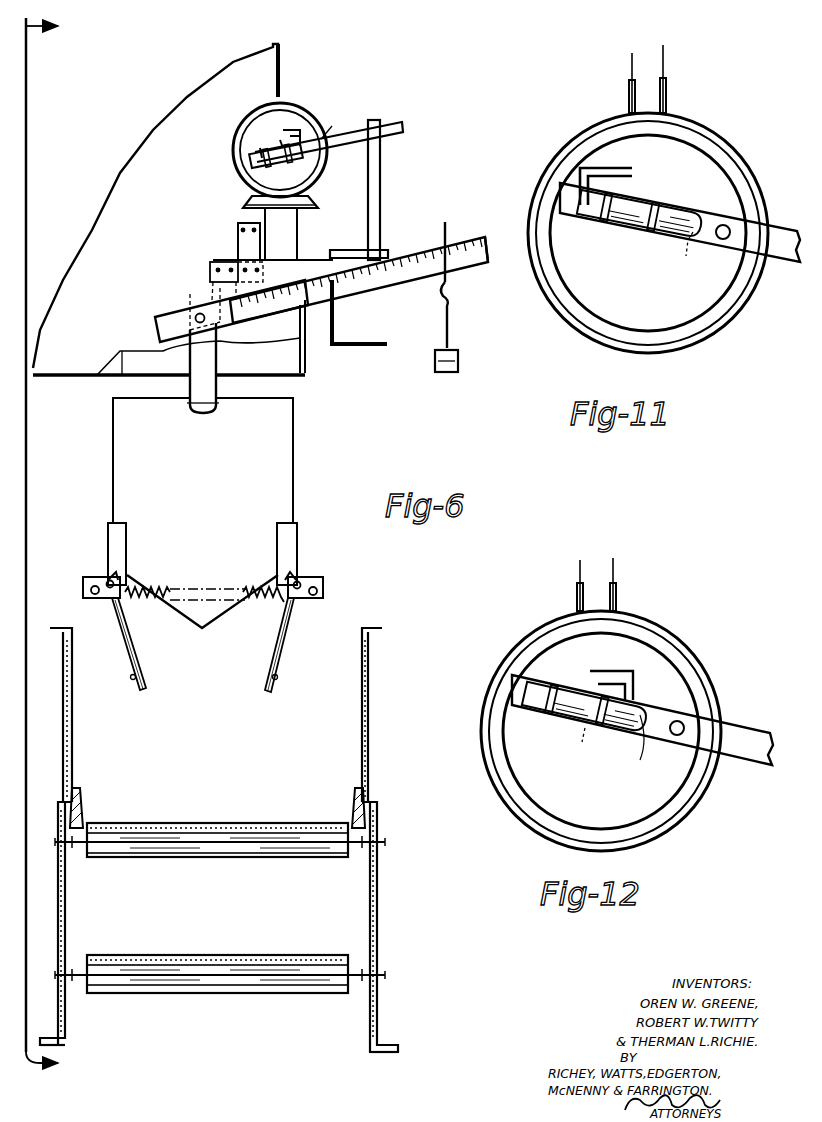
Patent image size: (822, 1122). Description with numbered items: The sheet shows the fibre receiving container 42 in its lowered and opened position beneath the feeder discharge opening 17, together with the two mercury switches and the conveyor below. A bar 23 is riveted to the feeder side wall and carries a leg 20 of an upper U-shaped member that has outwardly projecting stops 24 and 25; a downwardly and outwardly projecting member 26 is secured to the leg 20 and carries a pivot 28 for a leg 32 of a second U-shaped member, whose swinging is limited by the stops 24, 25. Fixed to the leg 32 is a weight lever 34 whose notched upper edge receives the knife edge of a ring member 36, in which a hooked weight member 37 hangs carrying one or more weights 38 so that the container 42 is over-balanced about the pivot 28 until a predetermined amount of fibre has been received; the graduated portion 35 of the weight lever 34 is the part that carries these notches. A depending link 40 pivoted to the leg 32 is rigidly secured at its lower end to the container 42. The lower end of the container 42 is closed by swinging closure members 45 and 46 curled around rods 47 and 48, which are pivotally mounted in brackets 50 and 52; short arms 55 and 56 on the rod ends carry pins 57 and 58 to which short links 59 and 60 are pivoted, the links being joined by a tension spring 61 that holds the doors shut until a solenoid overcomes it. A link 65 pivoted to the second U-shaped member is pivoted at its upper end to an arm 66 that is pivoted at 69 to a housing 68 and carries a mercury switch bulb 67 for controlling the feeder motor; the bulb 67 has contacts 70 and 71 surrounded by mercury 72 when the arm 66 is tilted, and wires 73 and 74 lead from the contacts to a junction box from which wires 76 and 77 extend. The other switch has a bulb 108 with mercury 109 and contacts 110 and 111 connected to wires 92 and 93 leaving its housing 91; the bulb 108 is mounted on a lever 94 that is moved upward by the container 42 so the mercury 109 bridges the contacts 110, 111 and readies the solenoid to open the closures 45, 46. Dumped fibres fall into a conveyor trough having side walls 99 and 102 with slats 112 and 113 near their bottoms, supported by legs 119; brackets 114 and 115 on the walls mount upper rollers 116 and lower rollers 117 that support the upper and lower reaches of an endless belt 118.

In FIG. 6, the discharge opening 17 is at (290, 372).
In FIG. 6, the leg 20 is at (310, 238).
In FIG. 6, the bar 23 is at (237, 240).
In FIG. 6, the stop 24 is at (360, 240).
In FIG. 6, the stop 25 is at (347, 345).
In FIG. 6, the downwardly and outwardly projecting member 26 is at (205, 262).
In FIG. 6, the pivot 28 is at (215, 310).
In FIG. 6, the leg 32 is at (163, 325).
In FIG. 6, the weight lever 34 is at (482, 265).
In FIG. 6, the graduated scale beam 35 is at (427, 252).
In FIG. 6, the ring member 36 is at (452, 212).
In FIG. 6, the hooked weight member 37 is at (448, 330).
In FIG. 6, the weight 38 is at (458, 360).
In FIG. 6, the depending link 40 is at (192, 365).
In FIG. 6, the fibre receiving container 42 is at (203, 513).
In FIG. 6, the closure member 45 is at (262, 648).
In FIG. 6, the closure member 46 is at (134, 648).
In FIG. 6, the rod 47 is at (300, 573).
In FIG. 6, the rod 48 is at (105, 570).
In FIG. 6, the bracket 50 is at (296, 532).
In FIG. 6, the bracket 52 is at (108, 540).
In FIG. 6, the short arm 55 is at (324, 587).
In FIG. 6, the short arm 56 is at (82, 585).
In FIG. 6, the pin 57 is at (313, 598).
In FIG. 6, the pin 58 is at (93, 595).
In FIG. 6, the short link 59 is at (112, 600).
In FIG. 6, the short link 60 is at (296, 598).
In FIG. 6, the tension spring 61 is at (168, 580).
In FIG. 6, the link 65 is at (380, 205).
In FIG. 6, the arm 66 is at (400, 118).
In FIG. 12, the arm 66 is at (765, 730).
In FIG. 6, the mercury switch bulb 67 is at (262, 139).
In FIG. 12, the mercury switch bulb 67 is at (550, 690).
In FIG. 6, the housing 68 is at (295, 100).
In FIG. 12, the housing 68 is at (690, 648).
In FIG. 6, the pivot 69 is at (336, 124).
In FIG. 11, the pivot 69 is at (726, 225).
In FIG. 12, the pivot 69 is at (680, 736).
In FIG. 12, the contact 70 is at (628, 728).
In FIG. 12, the contact 71 is at (641, 744).
In FIG. 6, the mercury 72 is at (285, 166).
In FIG. 12, the mercury 72 is at (572, 740).
In FIG. 6, the wire 73 is at (280, 128).
In FIG. 12, the wire 73 is at (595, 698).
In FIG. 6, the wire 74 is at (294, 127).
In FIG. 12, the wire 74 is at (635, 675).
In FIG. 12, the wire 76 is at (576, 598).
In FIG. 12, the wire 77 is at (617, 598).
In FIG. 11, the housing 91 is at (740, 150).
In FIG. 11, the wire 92 is at (628, 97).
In FIG. 11, the wire 93 is at (667, 97).
In FIG. 11, the lever 94 is at (794, 228).
In FIG. 6, the side wall 99 is at (361, 752).
In FIG. 6, the side wall 102 is at (73, 740).
In FIG. 11, the mercury switch bulb 108 is at (658, 200).
In FIG. 11, the mercury 109 is at (671, 253).
In FIG. 11, the contact 110 is at (578, 208).
In FIG. 11, the contact 111 is at (590, 210).
In FIG. 6, the slat 112 is at (349, 800).
In FIG. 6, the slat 113 is at (84, 810).
In FIG. 6, the bracket 114 is at (369, 895).
In FIG. 6, the bracket 115 is at (66, 915).
In FIG. 6, the upper roller 116 is at (170, 858).
In FIG. 6, the lower roller 117 is at (232, 988).
In FIG. 6, the endless belt 118 is at (196, 820).
In FIG. 6, the leg 119 is at (66, 1040).